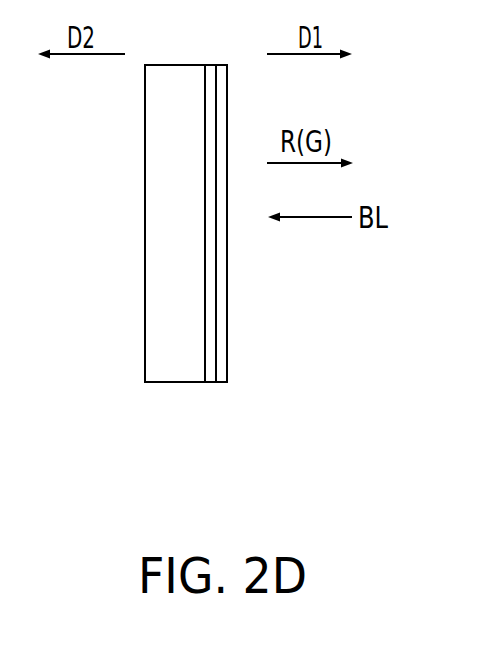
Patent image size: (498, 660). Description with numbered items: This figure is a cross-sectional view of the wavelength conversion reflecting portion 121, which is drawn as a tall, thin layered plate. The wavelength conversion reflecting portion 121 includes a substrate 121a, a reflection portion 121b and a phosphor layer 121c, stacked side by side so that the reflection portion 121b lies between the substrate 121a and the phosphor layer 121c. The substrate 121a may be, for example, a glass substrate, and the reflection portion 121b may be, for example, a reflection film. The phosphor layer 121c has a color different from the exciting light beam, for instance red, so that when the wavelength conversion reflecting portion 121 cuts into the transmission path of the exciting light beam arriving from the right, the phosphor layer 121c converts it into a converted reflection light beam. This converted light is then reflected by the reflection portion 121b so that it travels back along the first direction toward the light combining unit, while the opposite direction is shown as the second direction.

The wavelength conversion reflecting portion 121 is at (396, 480).
The substrate 121a is at (170, 372).
The reflection portion 121b is at (212, 372).
The phosphor layer 121c is at (217, 300).